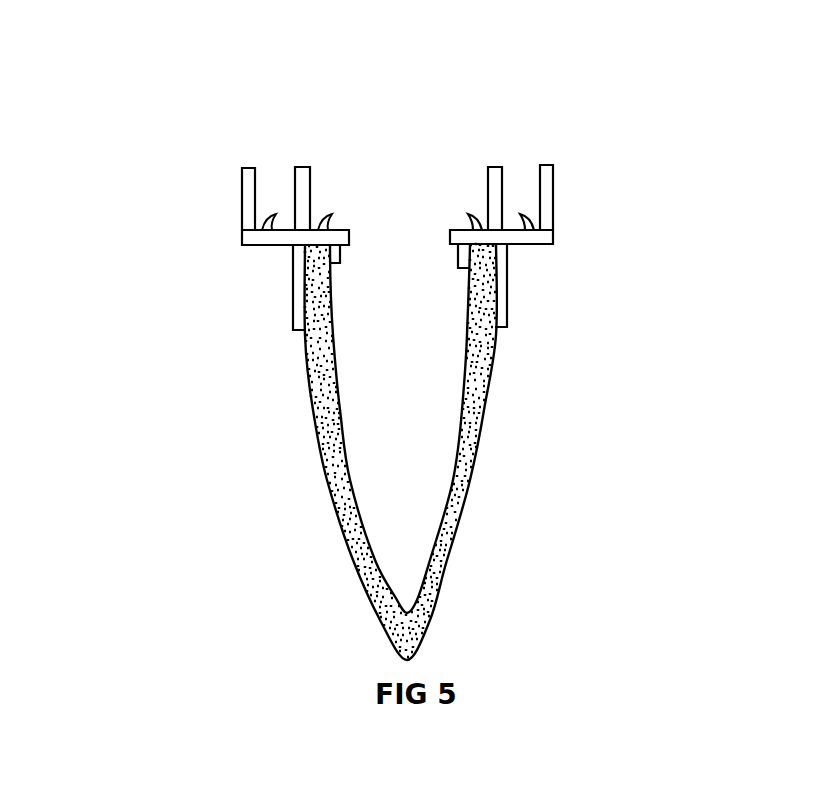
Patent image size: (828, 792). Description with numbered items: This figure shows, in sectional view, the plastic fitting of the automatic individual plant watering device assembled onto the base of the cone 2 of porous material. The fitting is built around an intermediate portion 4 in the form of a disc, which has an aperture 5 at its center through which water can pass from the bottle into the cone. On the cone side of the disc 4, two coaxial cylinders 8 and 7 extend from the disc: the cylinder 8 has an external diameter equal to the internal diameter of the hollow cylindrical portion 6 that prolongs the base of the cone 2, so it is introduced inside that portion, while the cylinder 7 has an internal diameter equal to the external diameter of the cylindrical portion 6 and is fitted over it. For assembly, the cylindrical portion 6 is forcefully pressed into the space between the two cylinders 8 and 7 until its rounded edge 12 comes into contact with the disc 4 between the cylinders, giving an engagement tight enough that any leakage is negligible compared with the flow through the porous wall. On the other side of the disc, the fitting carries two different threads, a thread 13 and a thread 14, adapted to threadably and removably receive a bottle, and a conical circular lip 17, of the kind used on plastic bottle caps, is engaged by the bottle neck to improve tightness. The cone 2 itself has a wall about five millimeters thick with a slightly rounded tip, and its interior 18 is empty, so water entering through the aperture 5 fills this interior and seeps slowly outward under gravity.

The cone 2 is at (327, 527).
The intermediate portion 4 is at (243, 243).
The aperture 5 is at (401, 240).
The hollow cylindrical portion 6 is at (297, 313).
The cylinder 7 is at (296, 324).
The cylinder 8 is at (294, 276).
The edge 12 is at (495, 258).
The thread 13 is at (261, 190).
The thread 14 is at (311, 183).
The conical circular lip 17 is at (272, 218).
The interior 18 is at (407, 537).